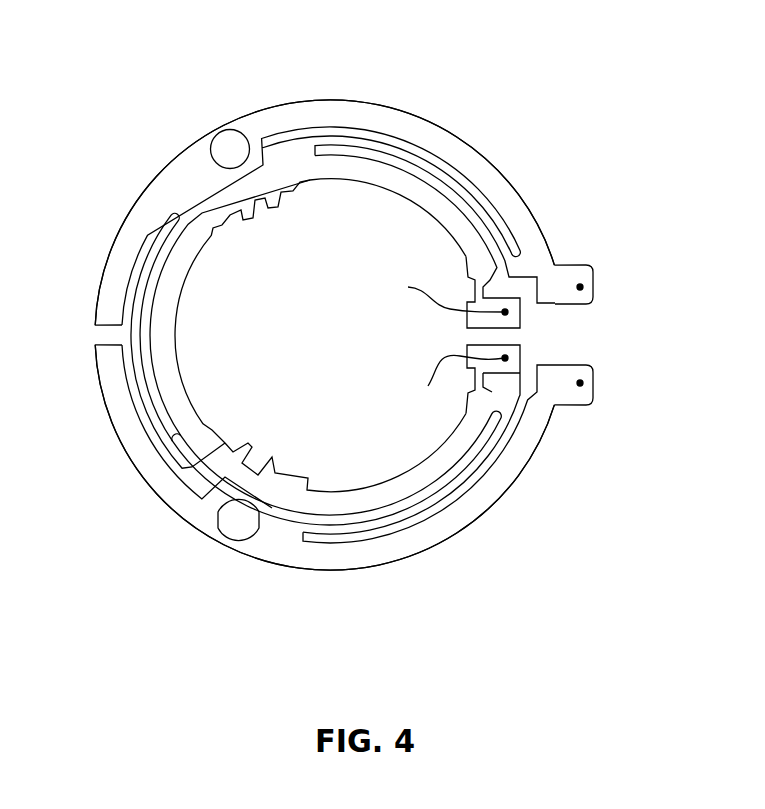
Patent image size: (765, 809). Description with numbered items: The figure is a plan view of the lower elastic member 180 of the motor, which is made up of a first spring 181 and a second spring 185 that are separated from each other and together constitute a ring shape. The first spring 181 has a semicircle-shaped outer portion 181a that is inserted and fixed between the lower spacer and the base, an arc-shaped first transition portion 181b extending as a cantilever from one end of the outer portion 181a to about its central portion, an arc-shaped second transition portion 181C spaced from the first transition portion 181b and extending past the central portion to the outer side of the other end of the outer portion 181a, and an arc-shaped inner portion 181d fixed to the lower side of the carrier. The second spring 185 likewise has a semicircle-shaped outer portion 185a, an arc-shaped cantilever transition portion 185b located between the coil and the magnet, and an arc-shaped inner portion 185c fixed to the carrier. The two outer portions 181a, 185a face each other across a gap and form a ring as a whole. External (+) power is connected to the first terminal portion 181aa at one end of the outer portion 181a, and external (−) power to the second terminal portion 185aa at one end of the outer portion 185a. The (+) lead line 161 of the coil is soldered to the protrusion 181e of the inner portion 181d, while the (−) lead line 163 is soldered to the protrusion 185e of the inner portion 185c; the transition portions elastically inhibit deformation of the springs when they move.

The lower elastic member 180 is at (102, 86).
The first spring 181 is at (341, 95).
The outer portion 181a is at (437, 138).
The first transition portion 181b is at (477, 200).
The second transition portion 181C is at (140, 327).
The inner portion 181d is at (207, 217).
The protrusion 181e is at (522, 321).
The first terminal portion 181aa is at (565, 285).
The (+) lead line 161 is at (436, 293).
The (−) lead line 163 is at (459, 381).
The second spring 185 is at (291, 574).
The outer portion 185a is at (445, 528).
The transition portion 185b is at (473, 468).
The inner portion 185c is at (367, 493).
The protrusion 185e is at (522, 347).
The second terminal portion 185aa is at (568, 386).